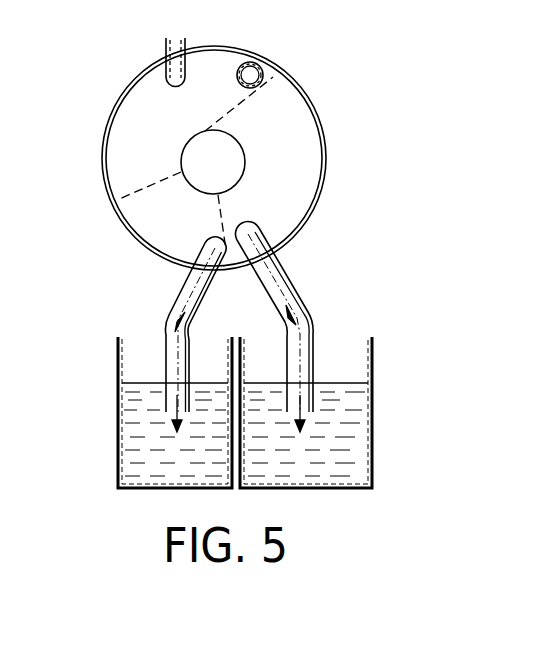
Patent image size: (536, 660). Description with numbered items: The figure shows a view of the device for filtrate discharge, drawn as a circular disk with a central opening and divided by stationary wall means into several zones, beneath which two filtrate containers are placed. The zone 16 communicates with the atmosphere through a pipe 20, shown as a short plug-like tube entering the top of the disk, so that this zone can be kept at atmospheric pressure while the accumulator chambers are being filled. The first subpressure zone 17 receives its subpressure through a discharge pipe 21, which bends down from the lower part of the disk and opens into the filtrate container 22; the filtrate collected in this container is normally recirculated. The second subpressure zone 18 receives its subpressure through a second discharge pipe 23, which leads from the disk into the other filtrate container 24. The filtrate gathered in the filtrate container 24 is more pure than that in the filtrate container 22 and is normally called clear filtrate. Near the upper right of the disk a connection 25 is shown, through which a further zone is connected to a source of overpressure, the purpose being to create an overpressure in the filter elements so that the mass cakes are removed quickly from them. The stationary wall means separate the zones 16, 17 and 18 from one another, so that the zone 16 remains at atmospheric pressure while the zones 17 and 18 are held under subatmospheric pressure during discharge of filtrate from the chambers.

The zone 16 is at (135, 143).
The first subpressure zone 17 is at (153, 227).
The second subpressure zone 18 is at (287, 155).
The pipe 20 is at (162, 50).
The discharge pipe 21 is at (197, 284).
The filtrate container 22 is at (128, 412).
The discharge pipe 23 is at (282, 280).
The filtrate container 24 is at (367, 415).
The connection 25 is at (258, 70).